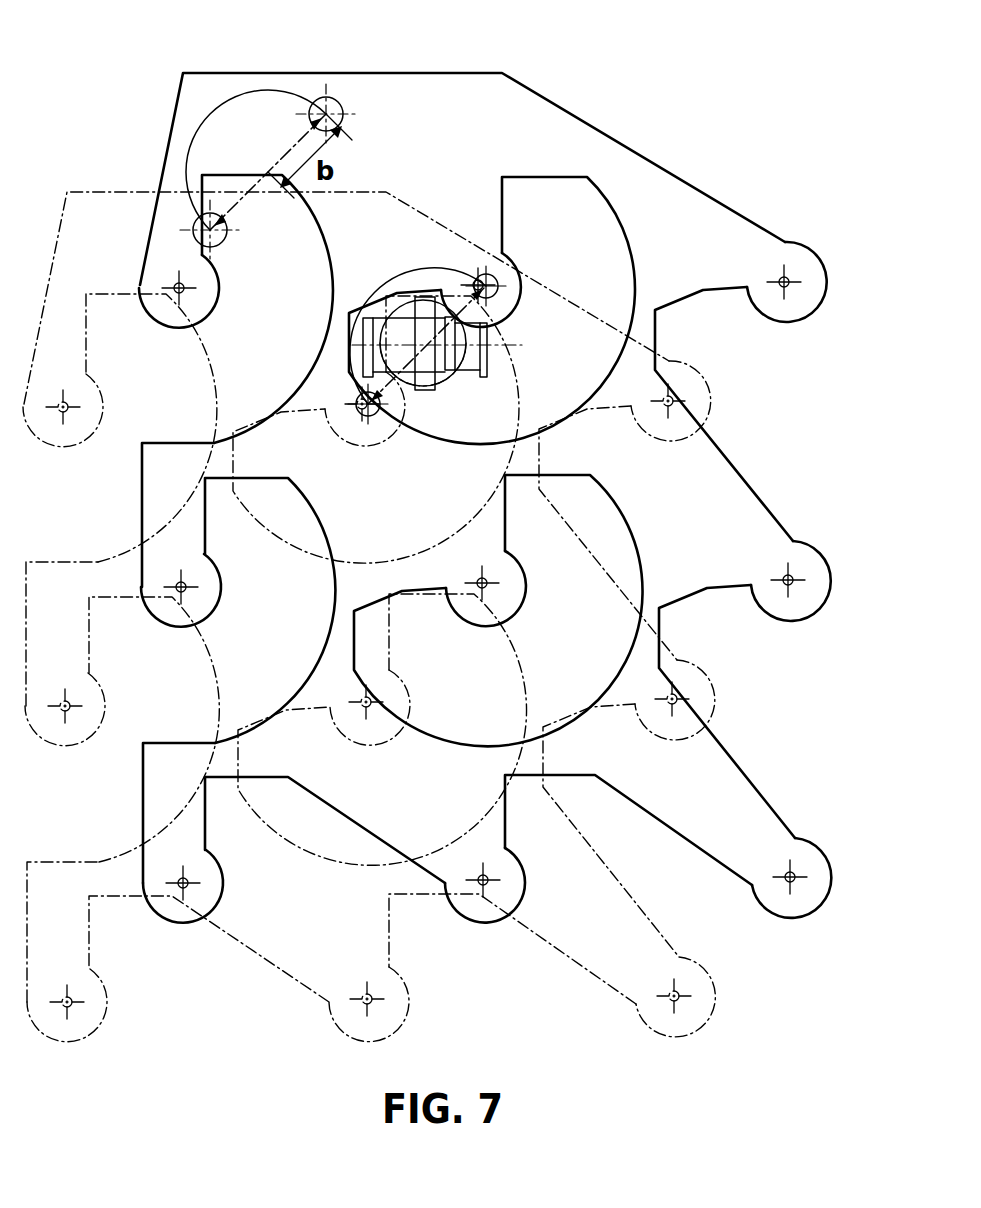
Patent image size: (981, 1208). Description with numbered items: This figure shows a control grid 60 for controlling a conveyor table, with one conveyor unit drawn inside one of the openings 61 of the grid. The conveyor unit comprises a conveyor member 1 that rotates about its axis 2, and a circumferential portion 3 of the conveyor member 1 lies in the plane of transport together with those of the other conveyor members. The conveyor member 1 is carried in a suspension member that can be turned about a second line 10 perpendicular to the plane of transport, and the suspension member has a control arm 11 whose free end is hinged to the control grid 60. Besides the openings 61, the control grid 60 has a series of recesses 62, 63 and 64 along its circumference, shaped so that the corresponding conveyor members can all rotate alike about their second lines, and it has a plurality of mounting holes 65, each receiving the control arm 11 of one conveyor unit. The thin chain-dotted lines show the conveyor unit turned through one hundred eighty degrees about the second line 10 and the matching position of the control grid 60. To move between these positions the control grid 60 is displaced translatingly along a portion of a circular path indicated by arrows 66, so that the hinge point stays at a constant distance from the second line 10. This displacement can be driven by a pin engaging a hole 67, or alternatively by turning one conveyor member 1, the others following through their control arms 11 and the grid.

The conveyor member 1 is at (405, 323).
The axis 2 is at (495, 346).
The circumferential portion 3 is at (423, 308).
The second line 10 is at (430, 368).
The control arm 11 is at (472, 313).
The control grid 60 is at (758, 774).
The openings 61 is at (530, 368).
The recess 62 is at (715, 349).
The recess 63 is at (603, 847).
The recess 64 is at (265, 318).
The mounting holes 65 is at (186, 294).
The arrows 66 is at (262, 89).
The hole 67 is at (338, 103).